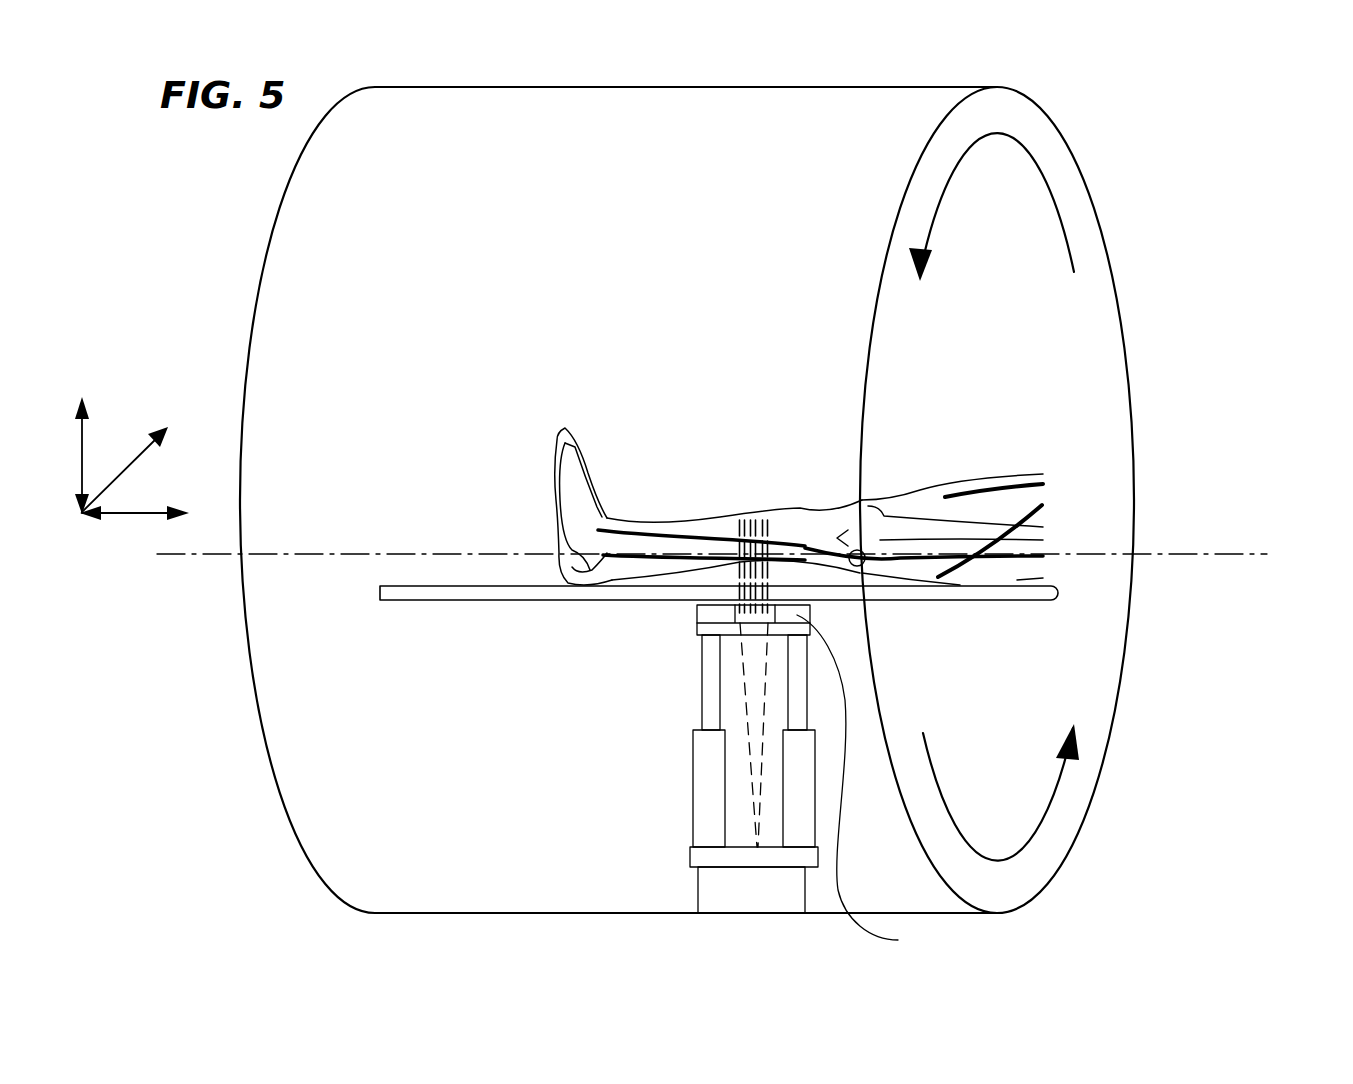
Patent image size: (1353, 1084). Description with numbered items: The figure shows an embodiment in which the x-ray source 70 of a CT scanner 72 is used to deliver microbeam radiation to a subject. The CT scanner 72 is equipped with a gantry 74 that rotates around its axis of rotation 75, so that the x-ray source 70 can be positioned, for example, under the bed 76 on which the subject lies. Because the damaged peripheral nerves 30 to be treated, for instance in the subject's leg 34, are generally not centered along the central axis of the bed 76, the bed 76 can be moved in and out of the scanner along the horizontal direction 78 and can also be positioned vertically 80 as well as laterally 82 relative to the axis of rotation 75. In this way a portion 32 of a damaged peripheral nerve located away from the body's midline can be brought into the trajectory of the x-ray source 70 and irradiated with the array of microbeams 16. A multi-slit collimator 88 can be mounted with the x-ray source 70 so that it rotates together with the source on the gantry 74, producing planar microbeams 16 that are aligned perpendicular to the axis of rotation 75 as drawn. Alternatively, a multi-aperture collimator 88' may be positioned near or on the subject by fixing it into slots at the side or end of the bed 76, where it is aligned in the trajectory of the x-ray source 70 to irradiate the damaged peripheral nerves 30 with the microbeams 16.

The array of microbeams 16 is at (668, 604).
The damaged peripheral nerves 30 is at (782, 578).
The portion of damaged peripheral nerve 32 is at (775, 590).
The subject's leg 34 is at (810, 521).
The x-ray source 70 is at (727, 900).
The CT scanner 72 is at (1112, 92).
The gantry 74 is at (418, 87).
The axis of rotation 75 is at (1267, 554).
The bed 76 is at (1066, 575).
The horizontal direction 78 is at (128, 513).
The vertical direction 80 is at (82, 427).
The lateral direction 82 is at (133, 450).
The multi-slit collimator 88 is at (865, 784).
The multi-aperture collimator 88' is at (979, 724).